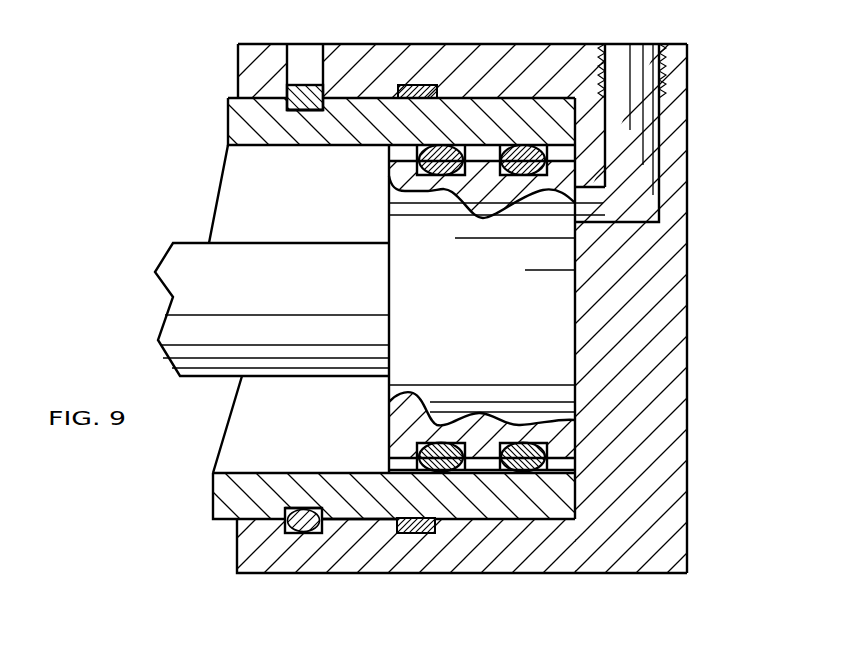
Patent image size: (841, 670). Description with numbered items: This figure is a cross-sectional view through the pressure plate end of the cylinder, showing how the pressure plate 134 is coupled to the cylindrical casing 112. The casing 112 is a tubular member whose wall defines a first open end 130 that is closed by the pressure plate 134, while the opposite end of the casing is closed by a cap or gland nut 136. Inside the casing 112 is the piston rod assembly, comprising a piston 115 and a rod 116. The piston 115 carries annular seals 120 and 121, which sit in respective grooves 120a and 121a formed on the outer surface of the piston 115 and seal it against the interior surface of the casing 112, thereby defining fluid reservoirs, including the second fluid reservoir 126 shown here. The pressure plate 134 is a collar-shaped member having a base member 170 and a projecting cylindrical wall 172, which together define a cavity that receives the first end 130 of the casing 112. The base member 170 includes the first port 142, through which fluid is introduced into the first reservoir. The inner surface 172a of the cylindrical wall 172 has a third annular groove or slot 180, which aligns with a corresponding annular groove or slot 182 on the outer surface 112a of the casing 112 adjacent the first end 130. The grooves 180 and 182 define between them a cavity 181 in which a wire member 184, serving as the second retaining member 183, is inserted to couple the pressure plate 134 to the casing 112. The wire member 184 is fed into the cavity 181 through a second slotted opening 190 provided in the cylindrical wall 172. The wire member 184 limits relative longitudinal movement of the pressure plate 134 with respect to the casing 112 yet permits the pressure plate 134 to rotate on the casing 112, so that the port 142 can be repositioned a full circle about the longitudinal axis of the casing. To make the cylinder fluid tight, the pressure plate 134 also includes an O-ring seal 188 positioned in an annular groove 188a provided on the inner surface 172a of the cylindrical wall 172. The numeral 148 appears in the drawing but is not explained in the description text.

The cylindrical casing 112 is at (213, 517).
The outer surface of casing 112a is at (253, 97).
The piston 115 is at (573, 447).
The rod 116 is at (180, 262).
The annular seal 120 is at (445, 473).
The groove 120a is at (446, 443).
The annular seal 121 is at (527, 473).
The groove 121a is at (530, 443).
The second fluid reservoir 126 is at (237, 208).
The first open end 130 is at (578, 128).
The pressure plate 134 is at (700, 403).
The cap or gland nut 136 is at (62, 0).
The first port 142 is at (622, 50).
The cap 148 is at (415, 93).
The base member 170 is at (633, 303).
The cylindrical wall 172 is at (393, 575).
The inner surface of cylindrical wall 172a is at (366, 508).
The third annular groove 180 is at (303, 534).
The cavity 181 is at (309, 115).
The annular groove 182 is at (318, 507).
The second retaining member 183 is at (308, 80).
The wire member 184 is at (325, 535).
The O-ring seal 188 is at (420, 533).
The annular groove 188a is at (428, 88).
The second slotted opening 190 is at (304, 52).